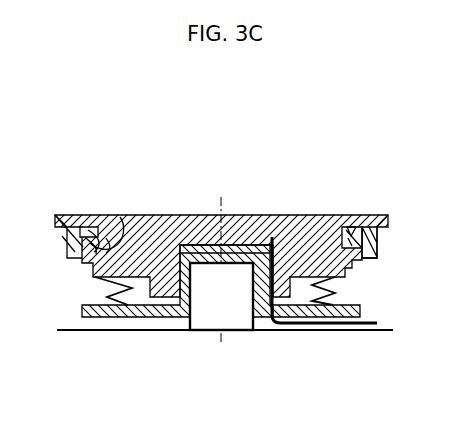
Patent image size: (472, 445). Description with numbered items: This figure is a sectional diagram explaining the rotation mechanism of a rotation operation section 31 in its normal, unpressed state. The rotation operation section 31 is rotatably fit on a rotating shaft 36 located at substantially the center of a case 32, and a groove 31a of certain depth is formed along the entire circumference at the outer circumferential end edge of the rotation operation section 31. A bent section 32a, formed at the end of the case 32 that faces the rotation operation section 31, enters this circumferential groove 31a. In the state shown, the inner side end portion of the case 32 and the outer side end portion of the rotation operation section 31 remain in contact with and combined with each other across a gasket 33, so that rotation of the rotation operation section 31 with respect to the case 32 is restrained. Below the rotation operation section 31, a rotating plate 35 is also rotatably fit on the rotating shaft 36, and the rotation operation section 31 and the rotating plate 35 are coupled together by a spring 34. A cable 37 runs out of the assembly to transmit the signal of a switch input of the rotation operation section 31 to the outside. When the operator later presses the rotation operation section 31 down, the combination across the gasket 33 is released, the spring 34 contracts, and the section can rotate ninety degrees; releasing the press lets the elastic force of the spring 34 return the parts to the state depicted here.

The rotation operation section 31 is at (312, 222).
The groove 31a is at (348, 231).
The case 32 is at (73, 222).
The bent section 32a is at (378, 246).
The gasket 33 is at (120, 217).
The spring 34 is at (132, 290).
The rotating plate 35 is at (170, 318).
The rotating shaft 36 is at (232, 328).
The cable 37 is at (305, 327).